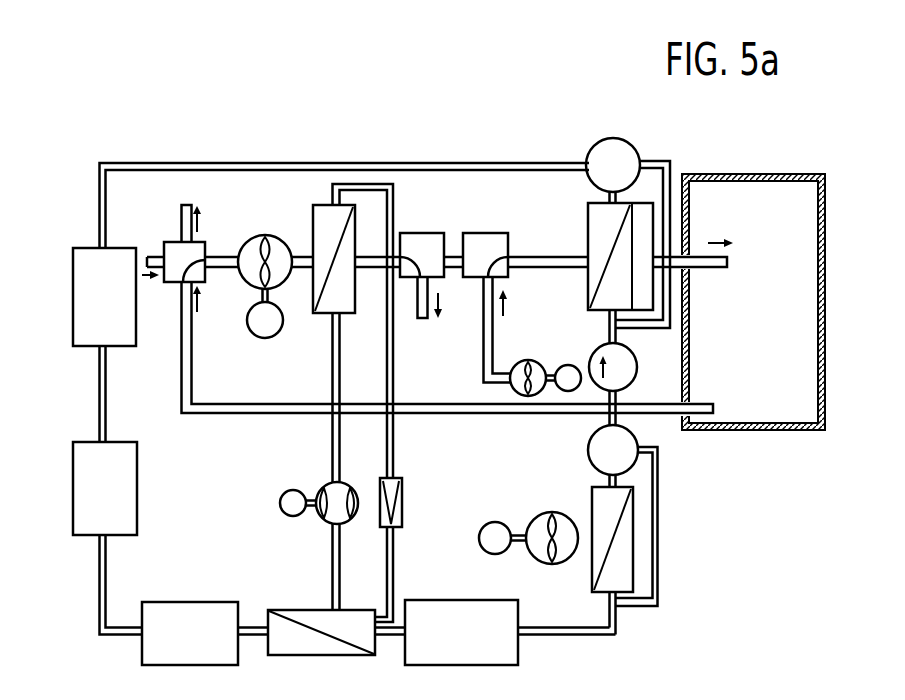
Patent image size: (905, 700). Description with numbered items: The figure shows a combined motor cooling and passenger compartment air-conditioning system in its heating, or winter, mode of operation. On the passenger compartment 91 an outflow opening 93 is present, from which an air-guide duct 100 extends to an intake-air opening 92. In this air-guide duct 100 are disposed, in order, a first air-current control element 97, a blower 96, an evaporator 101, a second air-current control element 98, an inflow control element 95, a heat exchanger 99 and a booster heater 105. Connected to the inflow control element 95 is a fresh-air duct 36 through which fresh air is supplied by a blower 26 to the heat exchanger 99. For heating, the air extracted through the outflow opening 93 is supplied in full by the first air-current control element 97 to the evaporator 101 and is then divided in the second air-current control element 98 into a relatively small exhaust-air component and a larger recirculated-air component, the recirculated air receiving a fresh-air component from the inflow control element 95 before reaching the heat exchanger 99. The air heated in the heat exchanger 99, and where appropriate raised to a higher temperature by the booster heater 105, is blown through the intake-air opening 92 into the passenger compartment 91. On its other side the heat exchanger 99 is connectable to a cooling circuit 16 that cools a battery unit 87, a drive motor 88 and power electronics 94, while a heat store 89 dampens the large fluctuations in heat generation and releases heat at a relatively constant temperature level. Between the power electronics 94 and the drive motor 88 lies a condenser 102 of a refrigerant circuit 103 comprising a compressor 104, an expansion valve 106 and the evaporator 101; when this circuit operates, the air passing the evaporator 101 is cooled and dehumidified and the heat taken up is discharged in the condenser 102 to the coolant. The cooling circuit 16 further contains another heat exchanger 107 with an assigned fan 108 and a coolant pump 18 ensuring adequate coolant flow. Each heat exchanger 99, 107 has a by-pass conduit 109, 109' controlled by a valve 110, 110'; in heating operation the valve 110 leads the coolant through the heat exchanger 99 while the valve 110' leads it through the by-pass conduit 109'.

The cooling circuit 16 is at (88, 396).
The coolant pump 18 is at (635, 361).
The blower 26 is at (534, 357).
The fresh-air duct 36 is at (483, 341).
The battery unit 87 is at (115, 516).
The drive motor 88 is at (205, 651).
The heat store 89 is at (85, 290).
The passenger compartment 91 is at (761, 354).
The intake-air opening 92 is at (704, 268).
The outflow opening 93 is at (708, 401).
The power electronics 94 is at (475, 651).
The inflow control element 95 is at (485, 240).
The blower 96 is at (242, 241).
The first air-current control element 97 is at (164, 241).
The second air-current control element 98 is at (423, 240).
The heat exchanger 99 is at (595, 222).
The air-guide duct 100 is at (225, 424).
The evaporator 101 is at (320, 228).
The condenser 102 is at (325, 647).
The refrigerant circuit 103 is at (405, 451).
The compressor 104 is at (327, 490).
The booster heater 105 is at (642, 206).
The expansion valve 106 is at (403, 500).
The heat exchanger 107 is at (602, 513).
The fan 108 is at (534, 518).
The by-pass conduit 109 is at (706, 212).
The valve 110 is at (596, 142).
The by-pass conduit 109' is at (675, 526).
The valve 110' is at (660, 456).